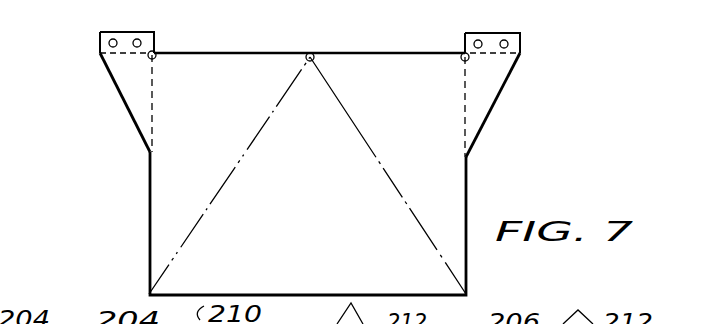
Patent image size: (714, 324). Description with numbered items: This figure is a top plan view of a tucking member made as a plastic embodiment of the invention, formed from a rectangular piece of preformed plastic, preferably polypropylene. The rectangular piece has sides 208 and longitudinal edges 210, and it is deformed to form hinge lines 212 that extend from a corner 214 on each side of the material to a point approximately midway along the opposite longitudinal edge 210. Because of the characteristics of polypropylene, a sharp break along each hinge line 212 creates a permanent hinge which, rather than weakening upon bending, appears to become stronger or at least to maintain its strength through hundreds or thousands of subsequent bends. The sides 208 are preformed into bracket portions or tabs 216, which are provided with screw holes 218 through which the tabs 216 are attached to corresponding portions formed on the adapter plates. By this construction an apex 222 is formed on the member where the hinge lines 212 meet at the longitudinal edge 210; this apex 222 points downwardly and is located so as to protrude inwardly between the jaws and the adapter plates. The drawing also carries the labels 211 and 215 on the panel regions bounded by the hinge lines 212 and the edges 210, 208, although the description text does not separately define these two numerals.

The side 208 is at (150, 198).
The longitudinal edge 210 is at (365, 53).
The panel 211 is at (418, 109).
The hinge line 212 is at (237, 165).
The corner 214 is at (233, 109).
The bottom panel 215 is at (341, 227).
The bracket portion or tab 216 is at (127, 102).
The screw hole 218 is at (101, 43).
The apex 222 is at (310, 54).